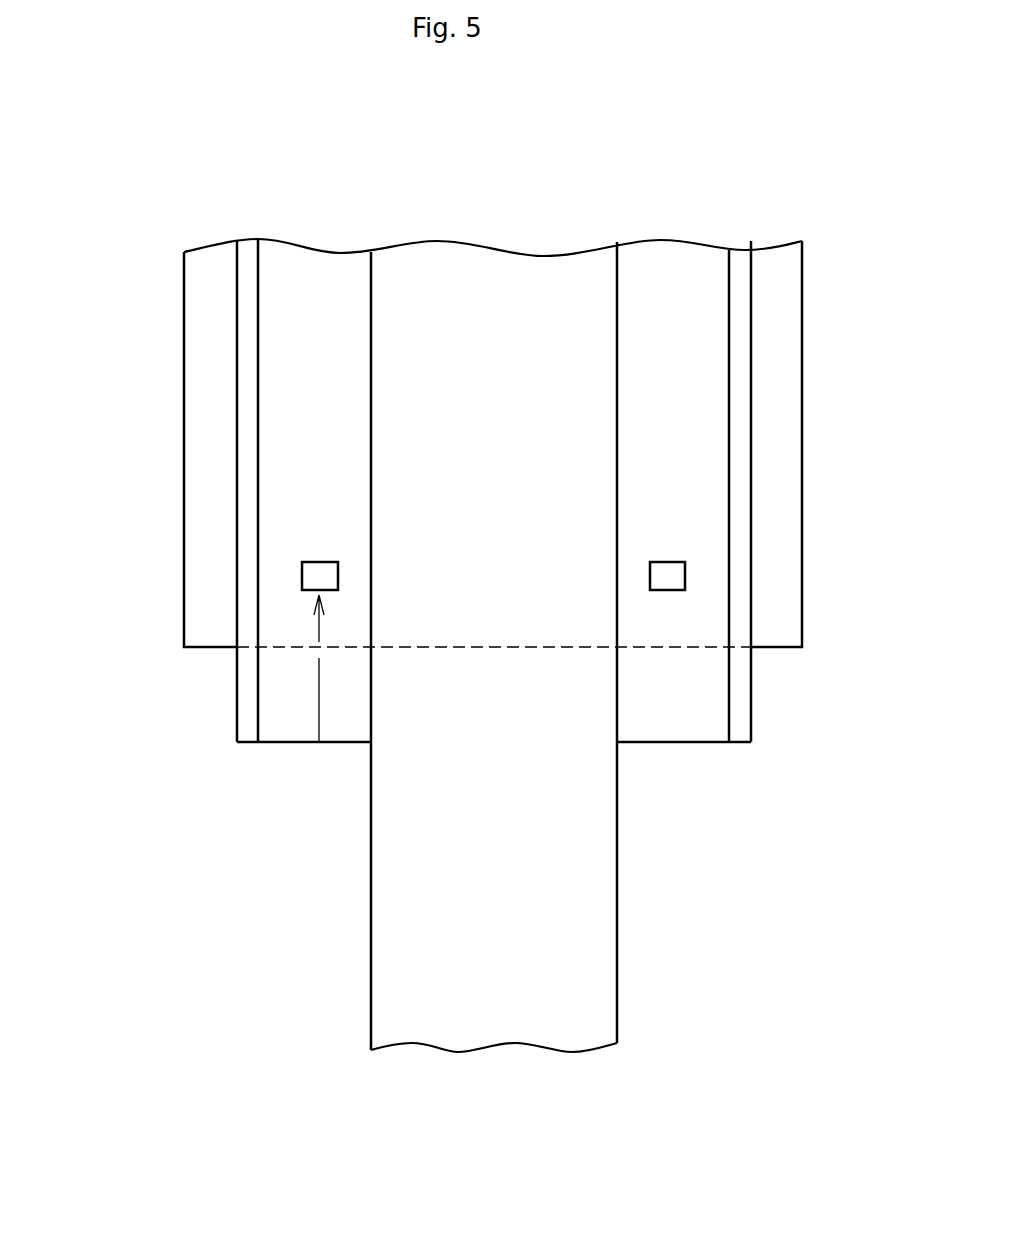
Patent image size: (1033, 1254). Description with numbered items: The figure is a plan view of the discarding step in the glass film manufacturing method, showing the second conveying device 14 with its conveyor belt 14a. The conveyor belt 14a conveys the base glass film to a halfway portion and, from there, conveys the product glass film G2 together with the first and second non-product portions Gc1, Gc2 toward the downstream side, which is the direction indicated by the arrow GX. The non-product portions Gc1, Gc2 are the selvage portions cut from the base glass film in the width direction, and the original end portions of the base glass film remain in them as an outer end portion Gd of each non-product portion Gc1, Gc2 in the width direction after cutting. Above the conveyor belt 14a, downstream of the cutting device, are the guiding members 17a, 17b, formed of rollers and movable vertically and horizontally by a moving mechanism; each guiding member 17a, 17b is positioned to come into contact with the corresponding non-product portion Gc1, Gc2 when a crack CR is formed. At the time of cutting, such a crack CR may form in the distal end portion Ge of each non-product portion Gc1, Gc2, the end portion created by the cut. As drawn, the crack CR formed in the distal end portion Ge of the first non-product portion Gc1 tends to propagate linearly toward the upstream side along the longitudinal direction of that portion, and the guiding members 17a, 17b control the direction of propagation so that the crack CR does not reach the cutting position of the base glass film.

The second conveying device 14 is at (767, 186).
The conveyor belt 14a is at (205, 353).
The first non-product portion Gc1 is at (297, 438).
The second non-product portion Gc2 is at (690, 440).
The outer end portion Gd is at (237, 506).
The guiding member 17a is at (316, 576).
The guiding member 17b is at (670, 576).
The crack CR is at (319, 697).
The distal end portion Ge is at (285, 742).
The product glass film G2 is at (575, 910).
The gate extending direction GX is at (60, 377).